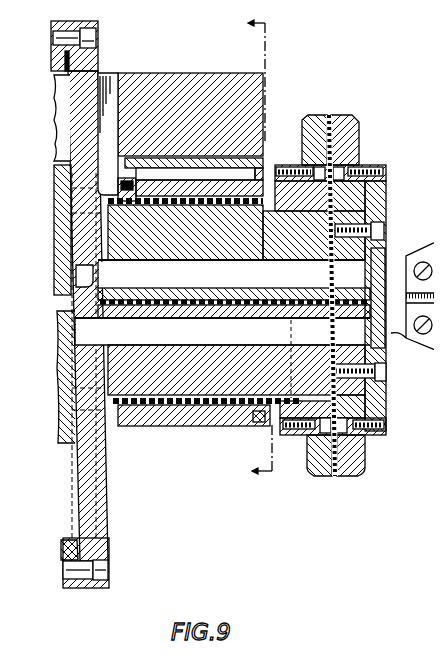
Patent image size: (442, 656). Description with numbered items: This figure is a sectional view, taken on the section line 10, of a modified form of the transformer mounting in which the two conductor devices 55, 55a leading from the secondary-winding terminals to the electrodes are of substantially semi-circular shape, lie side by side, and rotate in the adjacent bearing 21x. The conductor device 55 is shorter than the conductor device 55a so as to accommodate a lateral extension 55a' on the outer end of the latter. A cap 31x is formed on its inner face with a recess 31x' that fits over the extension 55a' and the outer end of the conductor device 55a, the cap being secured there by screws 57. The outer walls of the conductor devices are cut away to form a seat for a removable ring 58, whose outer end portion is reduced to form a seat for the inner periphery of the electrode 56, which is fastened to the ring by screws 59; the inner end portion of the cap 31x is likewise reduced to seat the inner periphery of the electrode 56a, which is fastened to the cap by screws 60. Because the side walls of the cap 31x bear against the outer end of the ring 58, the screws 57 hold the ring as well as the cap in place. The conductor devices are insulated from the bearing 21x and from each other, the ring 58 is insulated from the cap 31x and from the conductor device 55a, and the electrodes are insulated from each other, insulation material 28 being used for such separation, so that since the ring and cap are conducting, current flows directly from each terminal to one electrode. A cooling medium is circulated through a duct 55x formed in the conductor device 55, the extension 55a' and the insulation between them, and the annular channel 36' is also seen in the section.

The section line 10 is at (243, 247).
The insulation material 28 is at (62, 547).
The conductor device 55 is at (180, 166).
The duct 55x is at (238, 252).
The conductor device 55a is at (236, 373).
The lateral extension 55a' is at (389, 280).
The annular channel 36' is at (220, 319).
The bearing 21x is at (176, 412).
The cap 31x is at (350, 196).
The recess 31x' is at (357, 411).
The electrode 56 is at (303, 107).
The electrode 56a is at (334, 107).
The screws 57 is at (380, 364).
The removable ring 58 is at (277, 428).
The screws 59 is at (283, 160).
The screws 60 is at (358, 433).